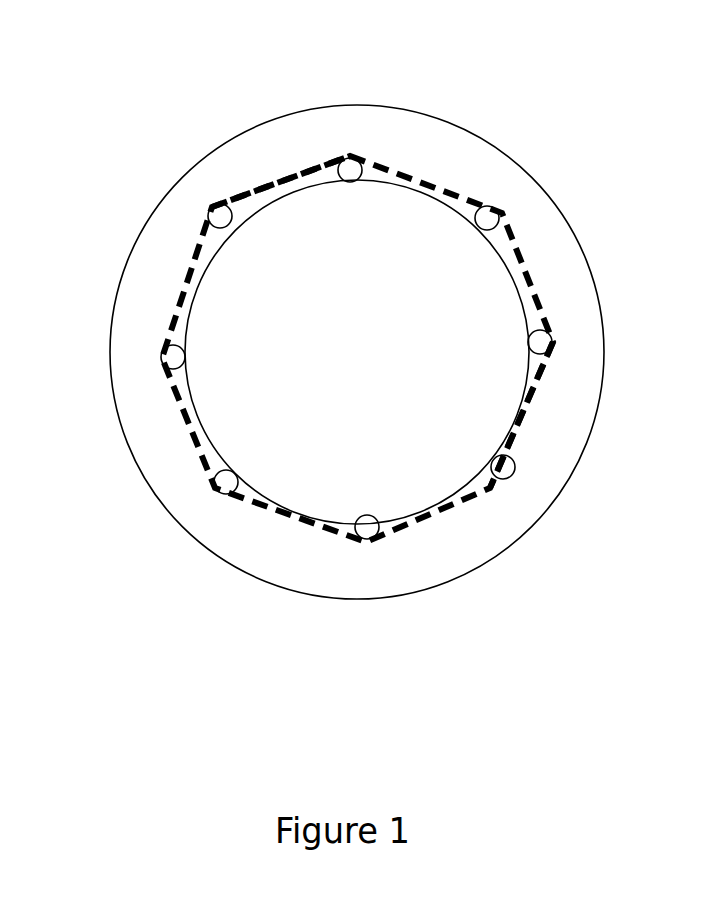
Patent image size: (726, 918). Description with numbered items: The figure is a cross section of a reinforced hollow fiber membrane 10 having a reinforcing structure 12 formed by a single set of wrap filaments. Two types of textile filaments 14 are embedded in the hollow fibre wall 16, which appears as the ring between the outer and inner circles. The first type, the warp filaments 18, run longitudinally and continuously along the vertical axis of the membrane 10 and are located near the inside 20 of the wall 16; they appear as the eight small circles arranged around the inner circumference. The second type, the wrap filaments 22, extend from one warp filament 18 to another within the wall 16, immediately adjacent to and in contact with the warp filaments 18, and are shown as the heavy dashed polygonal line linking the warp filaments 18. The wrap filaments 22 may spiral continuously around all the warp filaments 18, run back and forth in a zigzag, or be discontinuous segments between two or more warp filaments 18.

The reinforced hollow fiber membrane 10 is at (172, 612).
The reinforcing structure 12 is at (228, 180).
The textile filaments 14 is at (540, 388).
The hollow fibre wall 16 is at (435, 547).
The warp filaments 18 is at (488, 222).
The inside of the wall 20 is at (468, 480).
The wrap filaments 22 is at (383, 163).